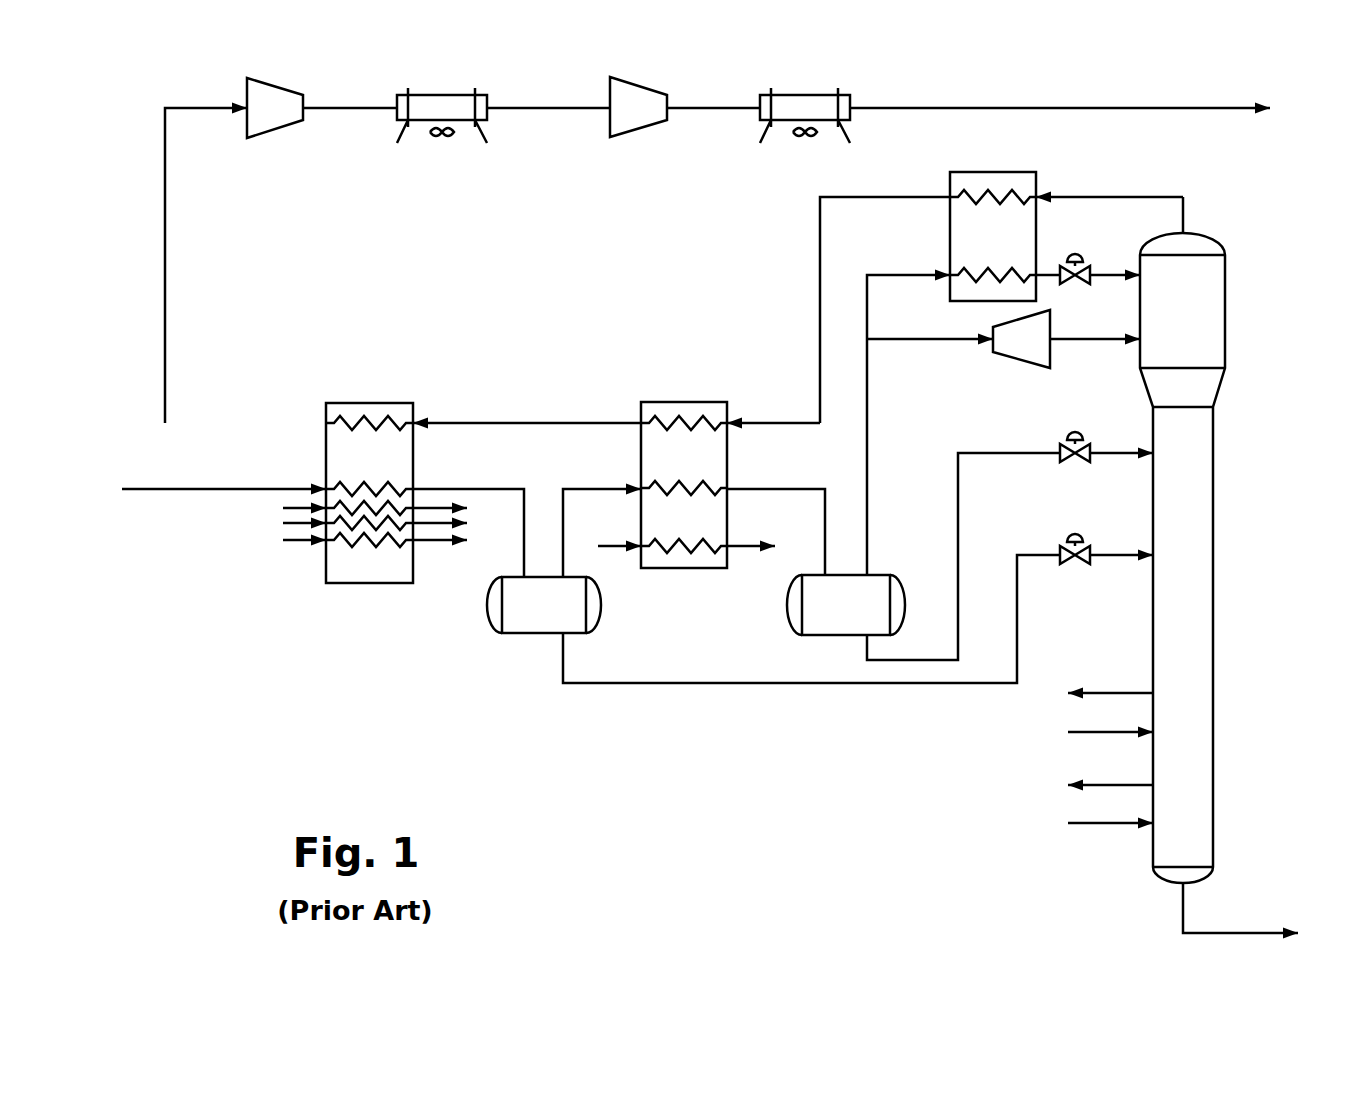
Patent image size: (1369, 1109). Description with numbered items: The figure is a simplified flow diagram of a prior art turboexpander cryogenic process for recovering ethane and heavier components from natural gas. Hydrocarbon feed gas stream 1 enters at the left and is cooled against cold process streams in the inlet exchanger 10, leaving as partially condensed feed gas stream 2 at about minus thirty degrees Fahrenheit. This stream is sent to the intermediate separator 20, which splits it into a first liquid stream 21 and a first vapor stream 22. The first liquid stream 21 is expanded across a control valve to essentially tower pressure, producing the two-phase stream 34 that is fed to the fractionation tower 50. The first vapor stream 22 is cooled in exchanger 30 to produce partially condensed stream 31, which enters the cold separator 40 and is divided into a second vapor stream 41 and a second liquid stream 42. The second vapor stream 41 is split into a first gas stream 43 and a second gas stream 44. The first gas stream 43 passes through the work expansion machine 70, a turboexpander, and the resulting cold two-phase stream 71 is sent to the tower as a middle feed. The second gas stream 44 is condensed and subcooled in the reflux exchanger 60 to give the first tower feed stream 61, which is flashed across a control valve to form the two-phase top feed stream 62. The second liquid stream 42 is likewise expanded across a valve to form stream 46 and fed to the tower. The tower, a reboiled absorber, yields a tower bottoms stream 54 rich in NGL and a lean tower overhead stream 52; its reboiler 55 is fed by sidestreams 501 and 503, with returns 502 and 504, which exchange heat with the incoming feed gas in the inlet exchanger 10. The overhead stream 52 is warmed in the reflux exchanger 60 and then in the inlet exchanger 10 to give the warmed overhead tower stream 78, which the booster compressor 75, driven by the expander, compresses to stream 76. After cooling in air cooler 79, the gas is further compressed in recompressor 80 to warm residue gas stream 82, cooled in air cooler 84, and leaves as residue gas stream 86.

The hydrocarbon feed gas stream 1 is at (190, 489).
The partially condensed feed gas stream 2 is at (495, 489).
The inlet exchanger 10 is at (352, 470).
The intermediate separator 20 is at (528, 621).
The first liquid stream 21 is at (690, 683).
The first vapor stream 22 is at (594, 489).
The exchanger 30 is at (669, 529).
The partially condensed stream 31 is at (782, 489).
The expanded first liquid stream 34 is at (1110, 556).
The cold separator 40 is at (835, 623).
The second vapor stream 41 is at (867, 540).
The second liquid stream 42 is at (958, 497).
The first gas stream 43 is at (942, 340).
The second gas stream 44 is at (902, 275).
The expanded second liquid stream 46 is at (1108, 457).
The fractionation tower 50 is at (1166, 323).
The tower overhead stream 52 is at (1148, 193).
The tower bottoms stream 54 is at (1237, 933).
The reboiler 55 is at (352, 574).
The reflux exchanger 60 is at (977, 246).
The first tower feed stream 61 is at (1053, 272).
The two-phase top feed stream 62 is at (1102, 272).
The work expansion machine 70 is at (1023, 347).
The two-phase expander outlet stream 71 is at (1095, 340).
The booster compressor 75 is at (275, 108).
The compressed overhead gas stream 76 is at (350, 108).
The warmed overhead tower stream 78 is at (166, 318).
The air cooler 79 is at (435, 107).
The recompressor 80 is at (637, 105).
The warm residue gas stream 82 is at (710, 108).
The air cooler 84 is at (805, 105).
The residue gas stream 86 is at (1000, 108).
The sidestream 501 is at (615, 546).
The sidestream return 502 is at (735, 546).
The sidestream 503 is at (293, 540).
The sidestream return 504 is at (428, 540).